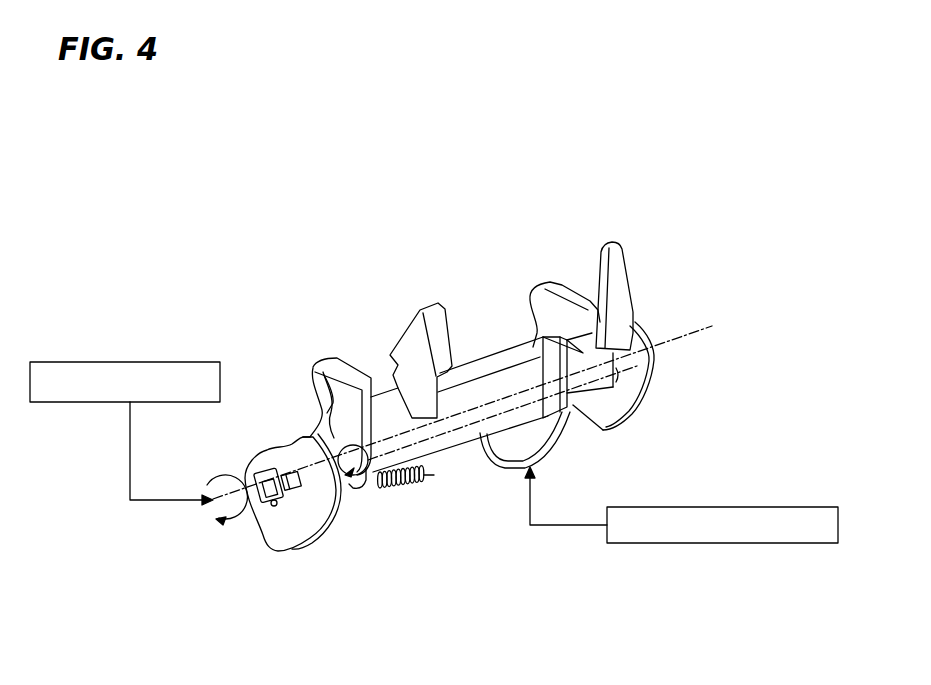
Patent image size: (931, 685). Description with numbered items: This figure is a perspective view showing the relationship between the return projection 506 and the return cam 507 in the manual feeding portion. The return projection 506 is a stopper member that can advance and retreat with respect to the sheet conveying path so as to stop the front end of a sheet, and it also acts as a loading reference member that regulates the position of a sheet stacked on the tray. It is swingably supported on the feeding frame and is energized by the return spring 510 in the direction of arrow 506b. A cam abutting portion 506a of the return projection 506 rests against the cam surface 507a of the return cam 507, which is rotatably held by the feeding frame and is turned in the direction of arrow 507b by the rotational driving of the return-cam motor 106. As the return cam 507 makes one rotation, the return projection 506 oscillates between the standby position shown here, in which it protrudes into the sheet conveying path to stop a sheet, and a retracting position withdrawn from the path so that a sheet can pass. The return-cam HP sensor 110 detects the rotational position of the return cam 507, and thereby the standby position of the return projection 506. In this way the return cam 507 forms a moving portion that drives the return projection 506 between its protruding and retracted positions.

The return-cam motor 106 is at (137, 362).
The return-cam HP sensor 110 is at (673, 544).
The return projection 506 is at (438, 326).
The cam abutting portion 506a is at (312, 370).
The arrow (energizing direction) 506b is at (357, 484).
The return cam 507 is at (283, 548).
The cam surface 507a is at (310, 430).
The arrow (rotation direction) 507b is at (236, 521).
The return spring 510 is at (405, 488).